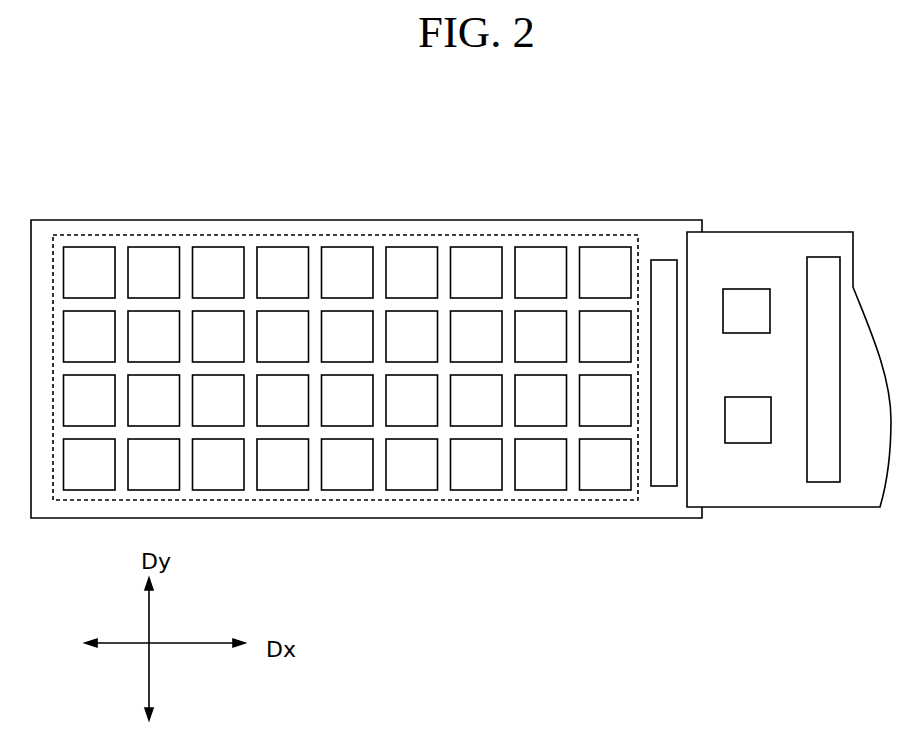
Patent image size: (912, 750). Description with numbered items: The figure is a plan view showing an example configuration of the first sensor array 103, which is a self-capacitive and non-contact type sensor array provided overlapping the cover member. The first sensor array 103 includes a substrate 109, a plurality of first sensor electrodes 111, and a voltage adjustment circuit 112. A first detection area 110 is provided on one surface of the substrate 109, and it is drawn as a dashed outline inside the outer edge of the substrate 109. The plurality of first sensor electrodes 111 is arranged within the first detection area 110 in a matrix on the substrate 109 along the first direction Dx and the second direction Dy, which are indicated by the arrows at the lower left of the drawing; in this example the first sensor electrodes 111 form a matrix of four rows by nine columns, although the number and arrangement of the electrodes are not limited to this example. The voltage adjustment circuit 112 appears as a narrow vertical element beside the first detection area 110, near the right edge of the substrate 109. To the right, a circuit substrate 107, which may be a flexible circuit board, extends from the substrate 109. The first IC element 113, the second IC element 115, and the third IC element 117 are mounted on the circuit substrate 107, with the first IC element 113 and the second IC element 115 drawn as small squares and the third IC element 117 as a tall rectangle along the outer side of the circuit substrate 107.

The first sensor array 103 is at (664, 140).
The circuit substrate 107 is at (750, 232).
The substrate 109 is at (383, 518).
The first detection area 110 is at (310, 235).
The first sensor electrodes 111 is at (538, 247).
The voltage adjustment circuit 112 is at (665, 486).
The first IC element 113 is at (743, 333).
The second IC element 115 is at (745, 443).
The third IC element 117 is at (820, 482).